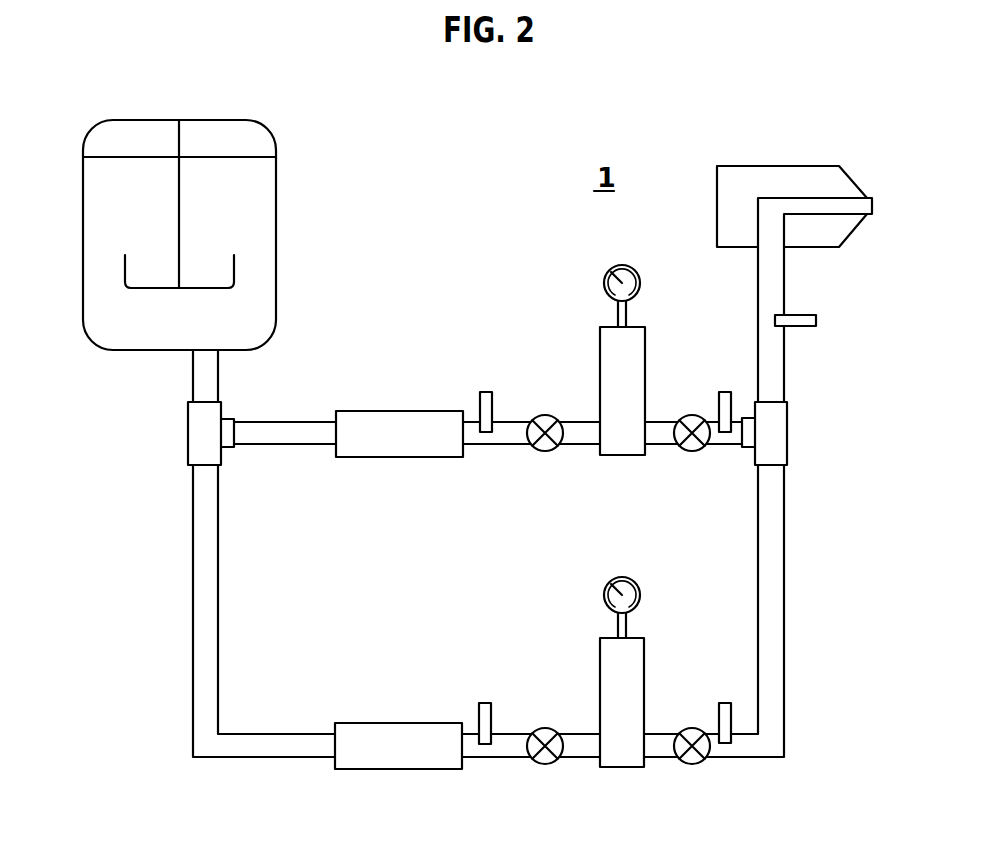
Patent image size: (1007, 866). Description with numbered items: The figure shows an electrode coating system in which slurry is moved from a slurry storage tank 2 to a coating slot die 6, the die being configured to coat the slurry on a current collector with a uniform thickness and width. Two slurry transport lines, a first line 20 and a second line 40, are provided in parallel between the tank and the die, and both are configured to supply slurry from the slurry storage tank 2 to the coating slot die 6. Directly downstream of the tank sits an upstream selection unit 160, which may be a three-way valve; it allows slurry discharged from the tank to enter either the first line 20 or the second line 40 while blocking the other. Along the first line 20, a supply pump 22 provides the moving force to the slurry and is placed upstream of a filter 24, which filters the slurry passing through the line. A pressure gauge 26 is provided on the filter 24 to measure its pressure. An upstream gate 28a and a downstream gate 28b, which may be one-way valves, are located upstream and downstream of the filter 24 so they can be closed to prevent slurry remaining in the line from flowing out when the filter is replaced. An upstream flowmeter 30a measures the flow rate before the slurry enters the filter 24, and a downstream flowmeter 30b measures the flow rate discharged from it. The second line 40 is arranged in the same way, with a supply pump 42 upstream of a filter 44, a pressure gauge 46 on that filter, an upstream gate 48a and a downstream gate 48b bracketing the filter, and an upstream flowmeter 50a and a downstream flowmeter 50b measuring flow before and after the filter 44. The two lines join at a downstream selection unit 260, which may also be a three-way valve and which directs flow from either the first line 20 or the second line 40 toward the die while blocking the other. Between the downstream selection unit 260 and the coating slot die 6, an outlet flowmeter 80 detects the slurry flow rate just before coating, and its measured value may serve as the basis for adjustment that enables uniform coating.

The slurry storage tank 2 is at (276, 176).
The coating slot die 6 is at (757, 166).
The first line 20 is at (280, 420).
The supply pump 22 is at (392, 411).
The filter 24 is at (645, 330).
The pressure gauge 26 is at (609, 270).
The upstream gate 28a is at (540, 452).
The downstream gate 28b is at (685, 452).
The upstream flowmeter 30a is at (490, 392).
The downstream flowmeter 30b is at (725, 392).
The second line 40 is at (294, 734).
The supply pump 42 is at (395, 723).
The filter 44 is at (600, 655).
The pressure gauge 46 is at (609, 580).
The upstream gate 48a is at (545, 765).
The downstream gate 48b is at (690, 765).
The upstream flowmeter 50a is at (485, 703).
The downstream flowmeter 50b is at (725, 703).
The outlet flowmeter 80 is at (816, 320).
The upstream selection unit 160 is at (188, 435).
The downstream selection unit 260 is at (787, 432).